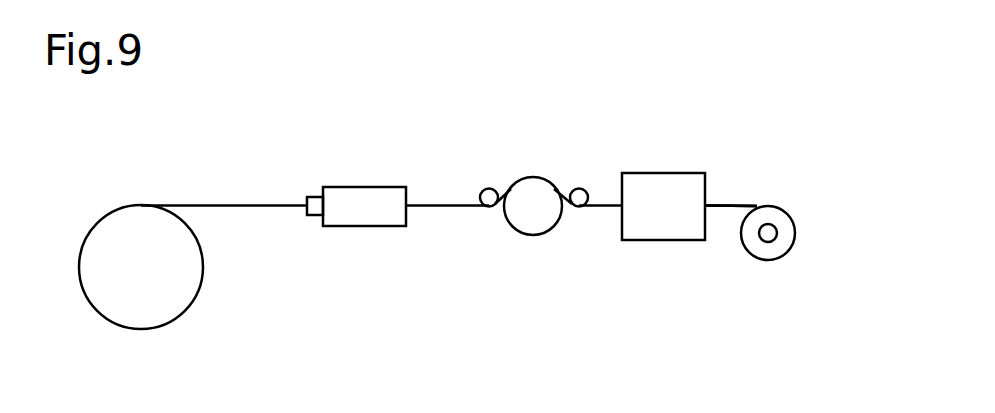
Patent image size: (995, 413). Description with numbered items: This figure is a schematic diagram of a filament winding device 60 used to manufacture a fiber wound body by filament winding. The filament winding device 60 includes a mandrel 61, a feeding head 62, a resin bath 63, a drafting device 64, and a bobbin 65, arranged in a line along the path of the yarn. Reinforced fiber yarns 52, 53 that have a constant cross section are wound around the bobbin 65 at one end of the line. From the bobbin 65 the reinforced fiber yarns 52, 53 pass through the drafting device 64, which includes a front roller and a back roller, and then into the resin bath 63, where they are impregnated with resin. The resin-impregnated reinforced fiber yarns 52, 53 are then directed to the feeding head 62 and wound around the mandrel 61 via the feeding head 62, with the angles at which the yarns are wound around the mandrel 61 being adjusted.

The filament winding device 60 is at (711, 137).
The mandrel 61 is at (204, 275).
The feeding head 62 is at (362, 227).
The resin bath 63 is at (533, 235).
The drafting device 64 is at (662, 241).
The reinforced fiber yarn 52 is at (737, 203).
The reinforced fiber yarn 53 is at (737, 203).
The bobbin 65 is at (795, 226).